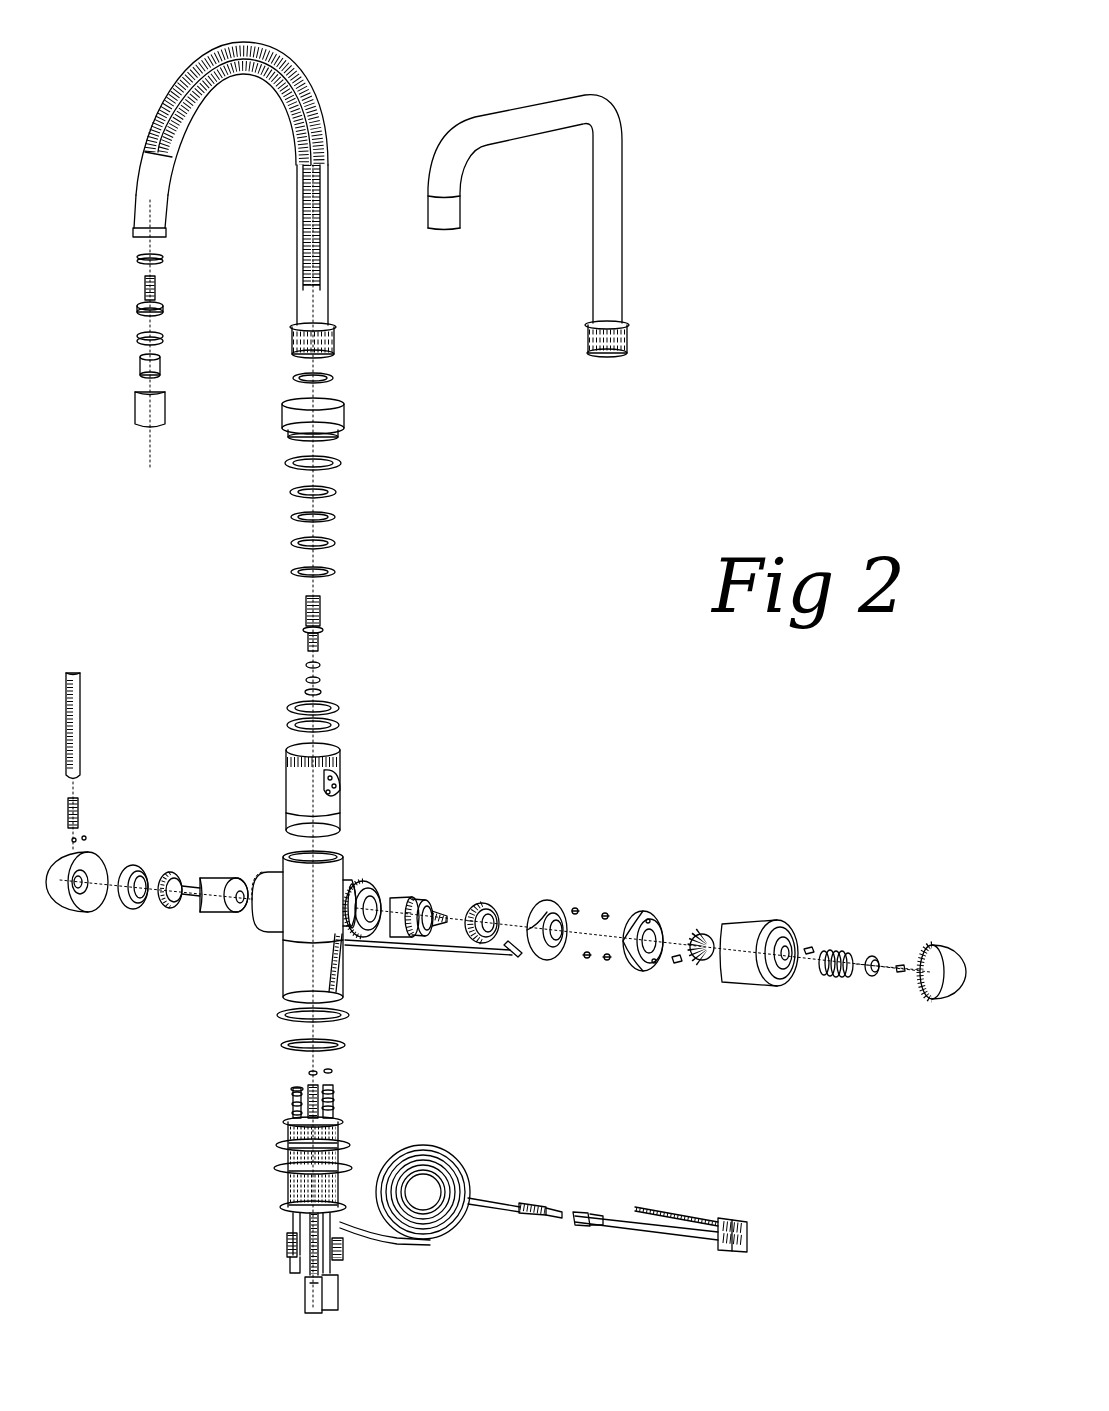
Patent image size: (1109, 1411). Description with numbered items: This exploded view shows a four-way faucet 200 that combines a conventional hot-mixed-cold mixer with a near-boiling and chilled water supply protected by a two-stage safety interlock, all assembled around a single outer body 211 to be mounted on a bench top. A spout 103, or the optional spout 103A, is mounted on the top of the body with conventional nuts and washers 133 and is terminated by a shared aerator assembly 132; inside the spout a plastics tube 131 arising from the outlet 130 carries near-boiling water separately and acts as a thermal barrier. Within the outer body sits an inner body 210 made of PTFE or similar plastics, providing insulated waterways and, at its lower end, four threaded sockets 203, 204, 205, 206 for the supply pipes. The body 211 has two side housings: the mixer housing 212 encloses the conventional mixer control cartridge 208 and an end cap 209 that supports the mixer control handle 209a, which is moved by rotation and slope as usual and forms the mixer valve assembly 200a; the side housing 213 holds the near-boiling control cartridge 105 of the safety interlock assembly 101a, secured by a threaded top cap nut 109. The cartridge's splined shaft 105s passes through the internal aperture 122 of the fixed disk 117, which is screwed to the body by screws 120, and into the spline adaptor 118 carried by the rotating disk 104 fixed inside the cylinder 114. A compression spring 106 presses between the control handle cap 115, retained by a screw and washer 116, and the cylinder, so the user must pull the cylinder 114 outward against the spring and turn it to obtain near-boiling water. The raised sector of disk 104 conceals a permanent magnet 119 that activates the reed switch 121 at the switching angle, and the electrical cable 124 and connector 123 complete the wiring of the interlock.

The spout 103 is at (283, 54).
The plastics tube 131 is at (318, 128).
The optional spout 103A is at (620, 138).
The four-way faucet 200 is at (806, 335).
The aerator assembly 132 is at (193, 242).
The nuts and washers 133 is at (272, 425).
The outlet 130 is at (320, 626).
The mixer control handle 209a is at (80, 722).
The inner body 210 is at (342, 780).
The side housing 213 is at (380, 878).
The safety interlock assembly 101a is at (655, 914).
The mixer housing 212 is at (264, 870).
The splined shaft 105s is at (372, 882).
The control cartridge 105 is at (398, 898).
The threaded top cap nut 109 is at (492, 904).
The disk 117 is at (544, 902).
The disk 104 is at (632, 912).
The cylinder 114 is at (746, 920).
The washer 116 is at (900, 962).
The end cap 209 is at (68, 913).
The mixer control cartridge 208 is at (190, 927).
The outer body 211 is at (283, 1000).
The internal aperture 122 is at (420, 950).
The reed switch 121 is at (516, 958).
The screws 120 is at (598, 962).
The permanent magnet 119 is at (680, 964).
The spline adaptor 118 is at (708, 962).
The compression spring 106 is at (842, 978).
The control handle cap 115 is at (938, 1000).
The threaded socket 203 is at (298, 1076).
The mixer valve assembly 200a is at (226, 1182).
The threaded socket 204 is at (296, 1102).
The threaded socket 205 is at (336, 1092).
The threaded socket 206 is at (340, 1164).
The cable 124 is at (650, 1206).
The electrical connector 123 is at (734, 1218).